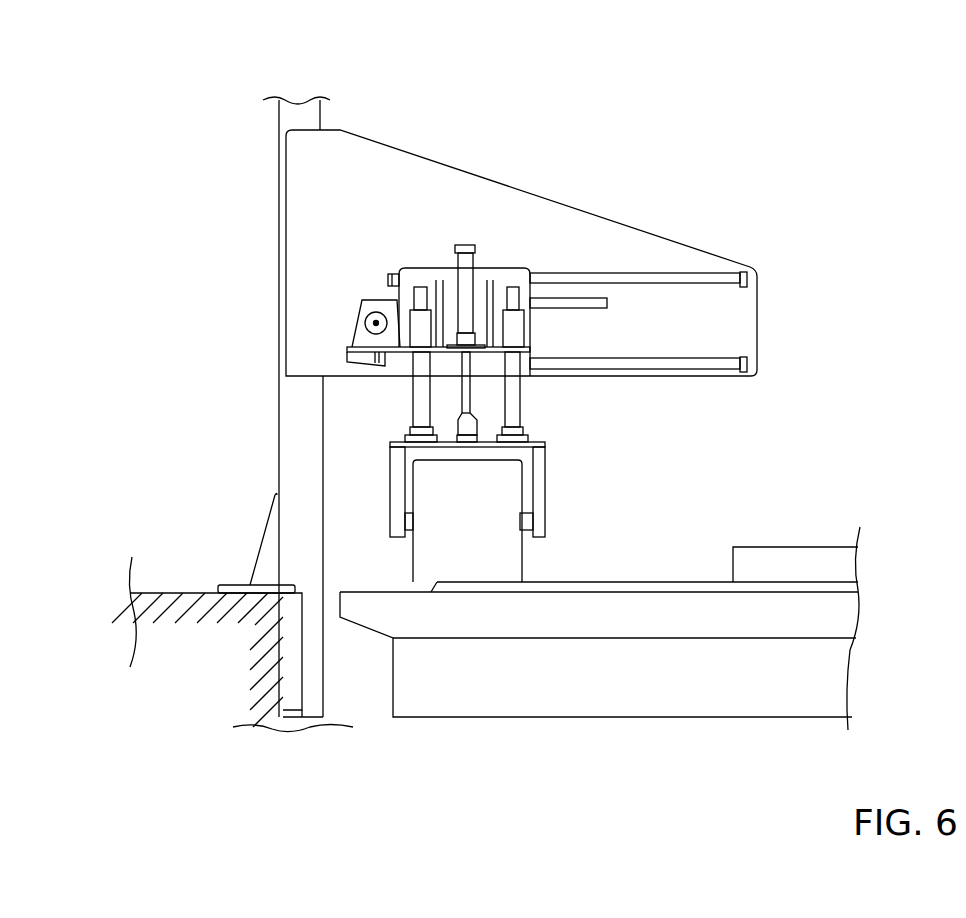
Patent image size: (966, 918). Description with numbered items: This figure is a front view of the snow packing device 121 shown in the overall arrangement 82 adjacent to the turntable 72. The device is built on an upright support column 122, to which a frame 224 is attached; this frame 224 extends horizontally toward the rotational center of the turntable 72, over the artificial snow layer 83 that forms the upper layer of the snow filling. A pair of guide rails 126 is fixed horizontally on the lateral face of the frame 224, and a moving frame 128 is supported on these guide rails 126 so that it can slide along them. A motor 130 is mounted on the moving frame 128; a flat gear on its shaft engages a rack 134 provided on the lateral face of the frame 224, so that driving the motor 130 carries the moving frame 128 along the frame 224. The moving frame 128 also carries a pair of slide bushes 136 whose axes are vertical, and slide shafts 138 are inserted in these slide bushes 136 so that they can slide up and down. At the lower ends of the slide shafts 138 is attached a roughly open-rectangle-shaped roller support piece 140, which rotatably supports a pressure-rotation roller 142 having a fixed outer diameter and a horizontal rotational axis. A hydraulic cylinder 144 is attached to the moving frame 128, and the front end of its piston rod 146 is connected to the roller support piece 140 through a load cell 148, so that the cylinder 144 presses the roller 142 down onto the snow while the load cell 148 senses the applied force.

The vial handling apparatus 82 is at (203, 140).
The support column 122 is at (280, 439).
The snow packing device 121 is at (625, 195).
The frame 224 is at (410, 178).
The guide rails 126 is at (708, 283).
The moving frame 128 is at (503, 267).
The hydraulic cylinder 144 is at (455, 258).
The motor 130 is at (358, 325).
The rack 134 is at (588, 310).
The slide bushes 136 is at (407, 343).
The piston rod 146 is at (460, 398).
The load cell 148 is at (477, 418).
The slide shafts 138 is at (412, 412).
The roller support piece 140 is at (545, 475).
The pressure-rotation roller 142 is at (523, 555).
The artificial snow layer 83 is at (682, 582).
The turntable 72 is at (800, 545).